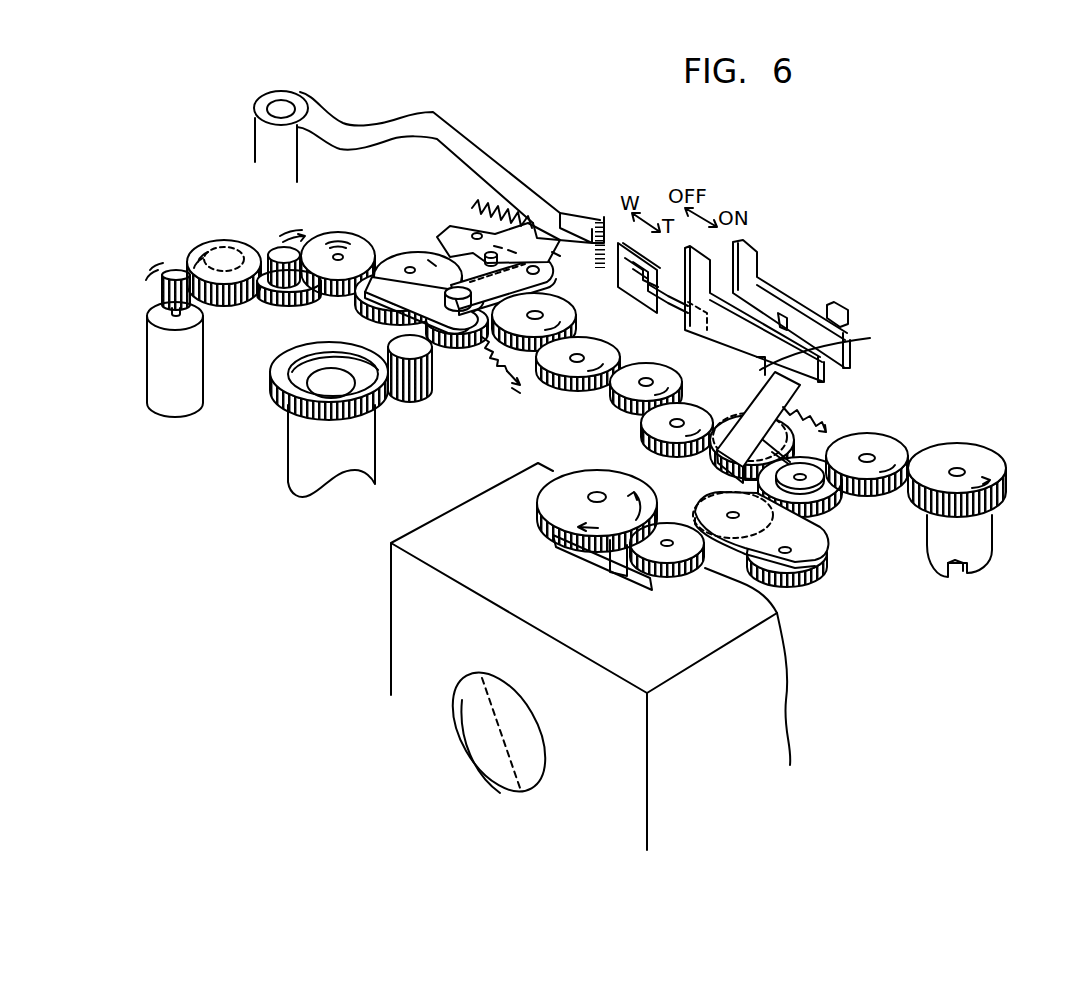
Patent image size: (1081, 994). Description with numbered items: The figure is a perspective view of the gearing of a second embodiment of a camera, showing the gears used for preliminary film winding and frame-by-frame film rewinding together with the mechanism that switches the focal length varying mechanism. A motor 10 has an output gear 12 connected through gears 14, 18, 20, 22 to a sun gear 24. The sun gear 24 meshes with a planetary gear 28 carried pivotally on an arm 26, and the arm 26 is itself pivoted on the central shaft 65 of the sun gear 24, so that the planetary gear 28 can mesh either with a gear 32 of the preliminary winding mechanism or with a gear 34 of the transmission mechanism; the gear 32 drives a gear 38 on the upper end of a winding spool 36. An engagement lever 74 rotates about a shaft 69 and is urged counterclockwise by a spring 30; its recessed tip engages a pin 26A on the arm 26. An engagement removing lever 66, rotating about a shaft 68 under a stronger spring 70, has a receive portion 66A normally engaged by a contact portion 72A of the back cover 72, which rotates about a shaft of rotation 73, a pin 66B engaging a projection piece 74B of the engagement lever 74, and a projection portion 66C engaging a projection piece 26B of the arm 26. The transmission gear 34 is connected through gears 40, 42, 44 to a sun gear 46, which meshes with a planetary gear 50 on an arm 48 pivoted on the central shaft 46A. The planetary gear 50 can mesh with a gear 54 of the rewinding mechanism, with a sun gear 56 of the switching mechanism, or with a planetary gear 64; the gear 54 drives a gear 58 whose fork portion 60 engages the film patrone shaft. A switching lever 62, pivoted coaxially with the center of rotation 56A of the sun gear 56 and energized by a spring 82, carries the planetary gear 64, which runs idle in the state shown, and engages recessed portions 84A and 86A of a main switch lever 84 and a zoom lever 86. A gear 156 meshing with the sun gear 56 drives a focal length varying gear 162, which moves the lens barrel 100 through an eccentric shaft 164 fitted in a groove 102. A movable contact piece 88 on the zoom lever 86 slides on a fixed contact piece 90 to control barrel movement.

The motor 10 is at (196, 385).
The output gear 12 is at (162, 292).
The gear 14 is at (212, 240).
The gear 18 is at (270, 305).
The gear 20 is at (283, 250).
The gear 22 is at (337, 240).
The sun gear 24 is at (368, 275).
The arm 26 is at (385, 297).
The pin 26A is at (420, 318).
The projection piece 26B is at (430, 262).
The planetary gear 28 is at (471, 345).
The spring 30 is at (515, 388).
The gear 32 is at (425, 382).
The gear 34 is at (578, 323).
The winding spool 36 is at (375, 452).
The gear 38 is at (283, 385).
The gear 40 is at (613, 350).
The gear 42 is at (660, 365).
The gear 44 is at (697, 402).
The sun gear 46 is at (718, 462).
The central shaft 46A is at (738, 420).
The arm 48 is at (802, 462).
The planetary gear 50 is at (826, 507).
The gear 54 is at (898, 445).
The sun gear 56 is at (716, 513).
The center of rotation 56A is at (740, 520).
The gear 58 is at (978, 462).
The fork portion 60 is at (975, 537).
The switching lever 62 is at (848, 305).
The planetary gear 64 is at (800, 590).
The central shaft 65 is at (408, 266).
The engagement removing lever 66 is at (480, 228).
The receive portion 66A is at (558, 255).
The pin 66B is at (512, 252).
The projection portion 66C is at (456, 195).
The shaft 68 is at (498, 246).
The shaft 69 is at (553, 270).
The spring 70 is at (476, 213).
The back cover 72 is at (430, 125).
The contact portion 72A is at (598, 216).
The shaft of rotation 73 is at (284, 104).
The engagement lever 74 is at (545, 258).
The projection piece 74B is at (525, 238).
The spring 82 is at (814, 407).
The main switch lever 84 is at (762, 268).
The recessed portion 84A is at (790, 318).
The zoom lever 86 is at (752, 332).
The recessed portion 86A is at (870, 338).
The movable contact piece 88 is at (675, 290).
The fixed contact piece 90 is at (630, 265).
The lens barrel 100 is at (780, 691).
The groove 102 is at (583, 550).
The gear 156 is at (672, 555).
The focal length varying gear 162 is at (574, 468).
The eccentric shaft 164 is at (617, 578).